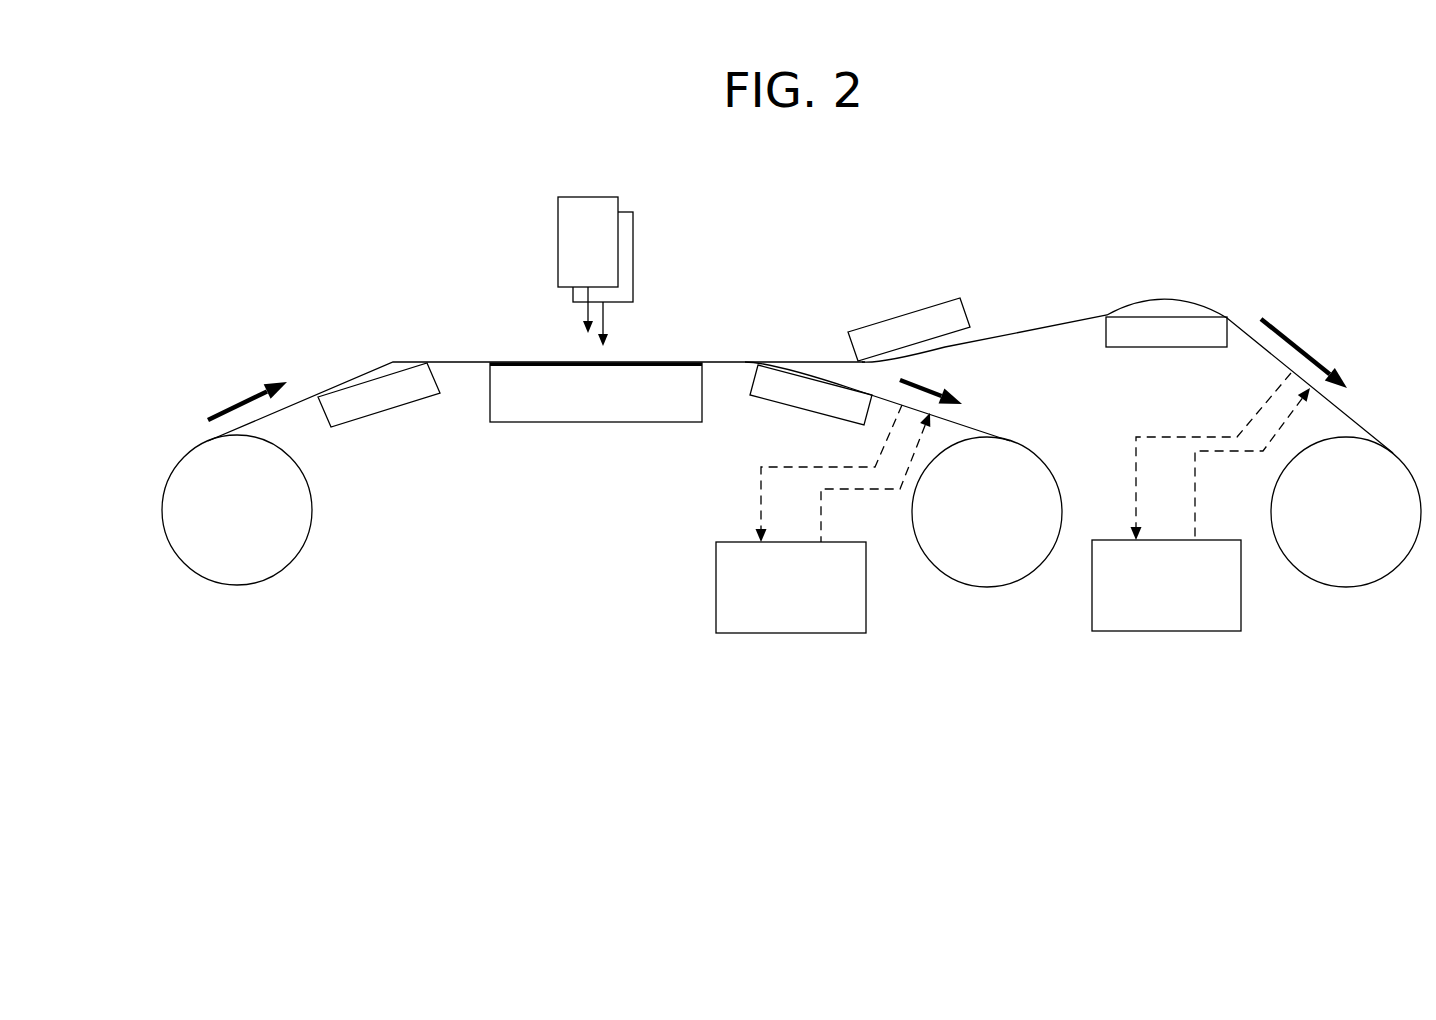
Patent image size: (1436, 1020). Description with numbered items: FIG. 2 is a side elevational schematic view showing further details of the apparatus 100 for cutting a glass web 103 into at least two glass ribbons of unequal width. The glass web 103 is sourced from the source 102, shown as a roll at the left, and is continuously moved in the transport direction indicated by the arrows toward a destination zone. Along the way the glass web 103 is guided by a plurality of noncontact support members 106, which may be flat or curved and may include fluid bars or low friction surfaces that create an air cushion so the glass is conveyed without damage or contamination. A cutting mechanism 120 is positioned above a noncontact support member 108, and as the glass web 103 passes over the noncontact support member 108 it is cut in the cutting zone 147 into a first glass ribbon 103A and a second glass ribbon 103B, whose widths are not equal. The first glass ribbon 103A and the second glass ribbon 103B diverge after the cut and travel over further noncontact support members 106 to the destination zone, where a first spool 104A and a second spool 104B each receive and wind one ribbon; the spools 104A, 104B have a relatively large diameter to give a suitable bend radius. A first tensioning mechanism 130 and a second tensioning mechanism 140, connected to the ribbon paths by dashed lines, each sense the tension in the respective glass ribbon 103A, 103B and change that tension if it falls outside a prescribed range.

The apparatus 100 is at (815, 180).
The source 102 is at (287, 567).
The glass web 103 is at (462, 360).
The first glass ribbon 103A is at (970, 418).
The second glass ribbon 103B is at (1053, 323).
The first spool 104A is at (1000, 570).
The second spool 104B is at (1391, 572).
The noncontact support members 106 is at (385, 392).
The noncontact support member 108 is at (632, 423).
The cutting mechanism 120 is at (580, 212).
The first tensioning mechanism 130 is at (716, 587).
The second tensioning mechanism 140 is at (1092, 601).
The cutting zone 147 is at (537, 332).